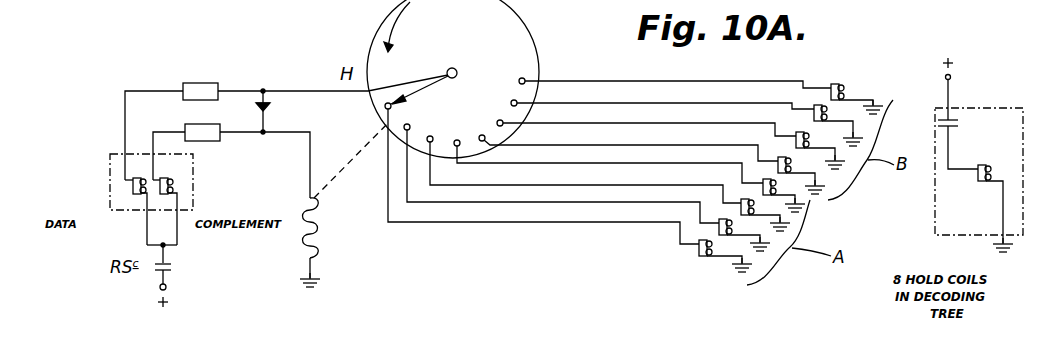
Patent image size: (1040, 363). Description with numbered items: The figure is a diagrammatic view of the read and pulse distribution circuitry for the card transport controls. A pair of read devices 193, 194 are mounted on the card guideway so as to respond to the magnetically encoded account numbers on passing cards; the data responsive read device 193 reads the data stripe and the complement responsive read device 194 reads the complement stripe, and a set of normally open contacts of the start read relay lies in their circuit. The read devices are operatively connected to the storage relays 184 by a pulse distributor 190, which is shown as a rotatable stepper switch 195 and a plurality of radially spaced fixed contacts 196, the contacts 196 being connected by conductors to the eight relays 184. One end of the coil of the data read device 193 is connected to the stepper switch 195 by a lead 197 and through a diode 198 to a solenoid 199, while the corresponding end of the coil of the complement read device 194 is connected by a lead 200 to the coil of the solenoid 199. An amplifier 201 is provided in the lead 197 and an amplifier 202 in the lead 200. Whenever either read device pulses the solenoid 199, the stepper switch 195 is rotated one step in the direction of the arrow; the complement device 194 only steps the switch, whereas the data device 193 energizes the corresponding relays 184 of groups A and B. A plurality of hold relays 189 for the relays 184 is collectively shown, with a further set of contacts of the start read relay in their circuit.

The relays 184 is at (840, 84).
The hold relays 189 is at (986, 106).
The pulse distributor 190 is at (520, 11).
The data responsive read device 193 is at (130, 186).
The complement responsive read device 194 is at (170, 188).
The stepper switch 195 is at (418, 80).
The contacts 196 is at (519, 78).
The lead 197 is at (141, 89).
The diode 198 is at (271, 106).
The solenoid 199 is at (320, 246).
The lead 200 is at (168, 131).
The amplifier 201 is at (214, 83).
The amplifier 202 is at (212, 142).